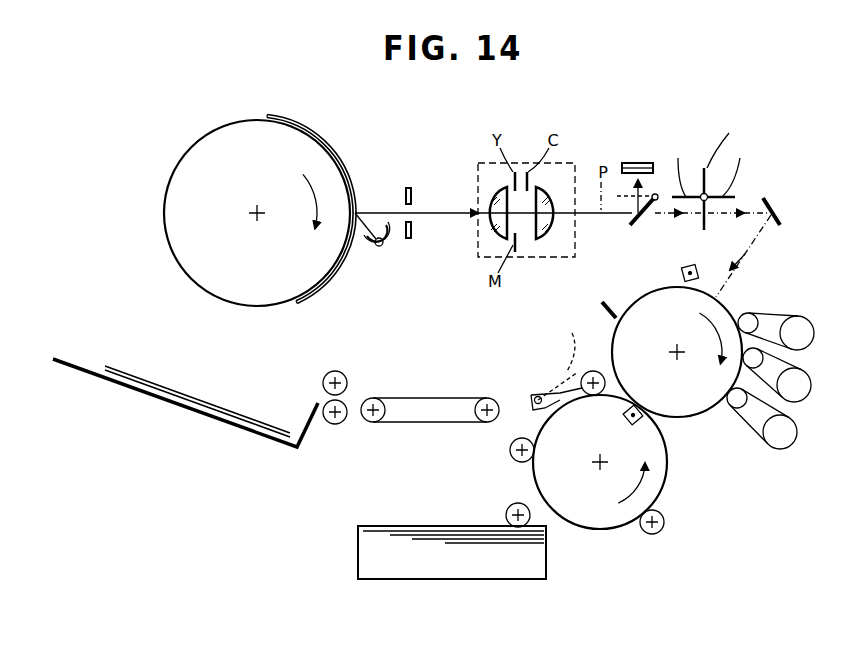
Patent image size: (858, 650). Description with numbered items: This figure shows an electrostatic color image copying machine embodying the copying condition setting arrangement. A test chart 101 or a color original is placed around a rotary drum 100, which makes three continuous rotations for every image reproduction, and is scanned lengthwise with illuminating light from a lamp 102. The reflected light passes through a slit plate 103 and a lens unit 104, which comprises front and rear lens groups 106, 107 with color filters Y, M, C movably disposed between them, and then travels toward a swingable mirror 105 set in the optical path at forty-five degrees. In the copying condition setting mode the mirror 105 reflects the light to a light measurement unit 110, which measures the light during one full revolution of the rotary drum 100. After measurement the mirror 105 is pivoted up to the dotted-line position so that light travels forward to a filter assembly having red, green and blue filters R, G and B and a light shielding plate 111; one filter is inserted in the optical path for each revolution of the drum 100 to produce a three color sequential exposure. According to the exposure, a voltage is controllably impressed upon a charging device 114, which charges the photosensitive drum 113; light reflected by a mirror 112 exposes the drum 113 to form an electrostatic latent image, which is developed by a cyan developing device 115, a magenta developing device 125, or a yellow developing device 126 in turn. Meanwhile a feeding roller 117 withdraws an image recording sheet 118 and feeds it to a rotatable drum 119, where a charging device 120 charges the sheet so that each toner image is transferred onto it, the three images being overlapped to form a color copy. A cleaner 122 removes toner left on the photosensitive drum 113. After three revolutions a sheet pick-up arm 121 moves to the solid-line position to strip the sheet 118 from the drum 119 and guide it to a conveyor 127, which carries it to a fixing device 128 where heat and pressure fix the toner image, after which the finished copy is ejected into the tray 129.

The rotary drum 100 is at (170, 248).
The test chart 101 is at (342, 137).
The lamp 102 is at (381, 252).
The slit plate 103 is at (406, 186).
The lens unit 104 is at (478, 240).
The swingable mirror 105 is at (645, 222).
The front lens group 106 is at (490, 200).
The rear lens group 107 is at (552, 190).
The light measurement unit 110 is at (638, 163).
The light shielding plate 111 is at (707, 222).
The mirror 112 is at (780, 210).
The photosensitive drum 113 is at (703, 405).
The charging device 114 is at (682, 273).
The cyan developing device 115 is at (777, 315).
The feeding roller 117 is at (512, 503).
The image recording sheet 118 is at (440, 526).
The rotatable drum 119 is at (603, 520).
The charging device 120 is at (625, 420).
The sheet pick-up arm 121 is at (553, 393).
The cleaner 122 is at (600, 305).
The magenta developing device 125 is at (785, 365).
The yellow developing unit 126 is at (757, 437).
The conveyor 127 is at (428, 396).
The fixing device 128 is at (334, 371).
The tray 129 is at (158, 397).